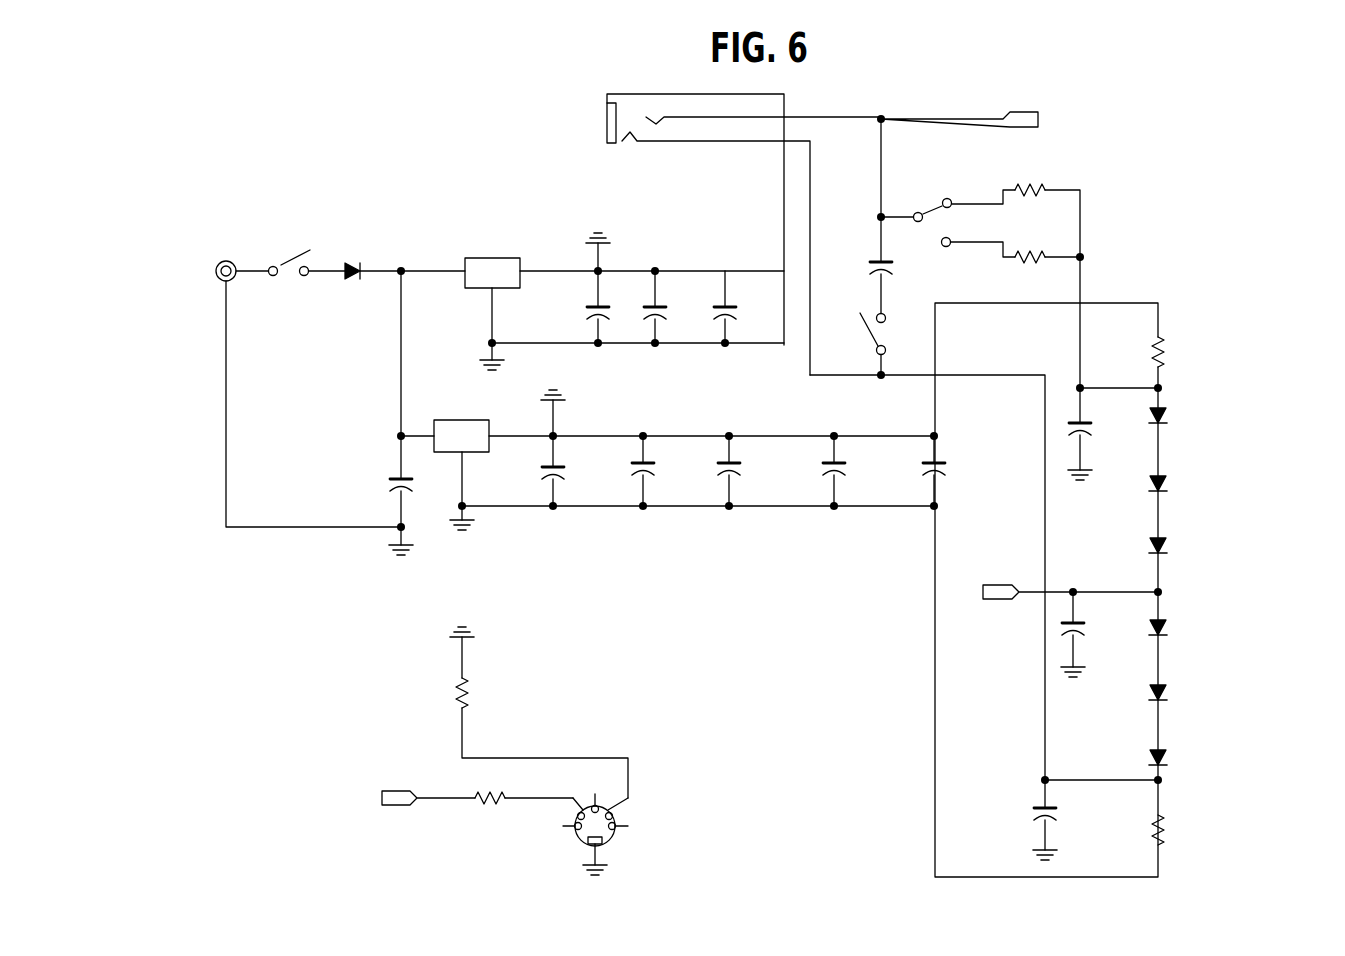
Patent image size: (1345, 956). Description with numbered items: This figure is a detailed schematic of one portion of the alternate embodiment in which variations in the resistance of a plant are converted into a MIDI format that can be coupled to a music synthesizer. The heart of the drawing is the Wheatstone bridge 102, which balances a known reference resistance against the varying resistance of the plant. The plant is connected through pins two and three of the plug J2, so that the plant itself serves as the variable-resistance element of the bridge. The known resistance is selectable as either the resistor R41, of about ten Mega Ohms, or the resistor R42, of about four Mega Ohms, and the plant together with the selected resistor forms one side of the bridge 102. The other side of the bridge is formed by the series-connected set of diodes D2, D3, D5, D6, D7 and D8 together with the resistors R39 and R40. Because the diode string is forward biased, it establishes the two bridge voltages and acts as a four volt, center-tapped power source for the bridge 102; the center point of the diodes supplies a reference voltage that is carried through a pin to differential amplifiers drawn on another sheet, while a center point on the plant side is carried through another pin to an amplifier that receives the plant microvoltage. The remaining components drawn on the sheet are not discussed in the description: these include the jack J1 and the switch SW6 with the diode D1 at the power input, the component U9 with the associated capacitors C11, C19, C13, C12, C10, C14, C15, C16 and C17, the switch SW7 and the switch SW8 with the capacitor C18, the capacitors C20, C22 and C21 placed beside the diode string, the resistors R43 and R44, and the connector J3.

The Wheatstone bridge 102 is at (1218, 229).
The power input jack J1 is at (236, 257).
The power switch SW6 is at (299, 255).
The diode 1N4004 D1 is at (392, 290).
The capacitor 22UF C11 is at (561, 293).
The capacitor .1UF C19 is at (677, 307).
The capacitor .1UF C13 is at (748, 303).
The voltage regulator LM7809CTB U9 is at (477, 460).
The capacitor 22UF C12 is at (386, 491).
The capacitor 22UF C10 is at (540, 455).
The capacitor .1UF C14 is at (665, 471).
The capacitor .1UF C15 is at (751, 471).
The capacitor .1UF C16 is at (856, 471).
The capacitor .1UF C17 is at (956, 471).
The plug J2 is at (687, 225).
The switch SW7 is at (948, 215).
The reference resistor R41 is at (1041, 210).
The reference resistor R42 is at (1040, 259).
The capacitor .1UF C18 is at (905, 265).
The switch SW8 is at (853, 344).
The resistor R39 is at (1164, 351).
The capacitor .1UF C20 is at (1101, 441).
The diode D2 is at (1227, 419).
The diode D3 is at (1227, 487).
The diode D5 is at (1227, 549).
The diode D6 is at (1227, 631).
The diode D7 is at (1227, 696).
The diode D8 is at (1227, 761).
The capacitor .1UF C22 is at (1095, 634).
The capacitor .1UF C21 is at (1067, 820).
The resistor R40 is at (1169, 827).
The resistor 220 R43 is at (520, 717).
The resistor 220 R44 is at (508, 794).
The MIDI output connector J3 is at (605, 834).